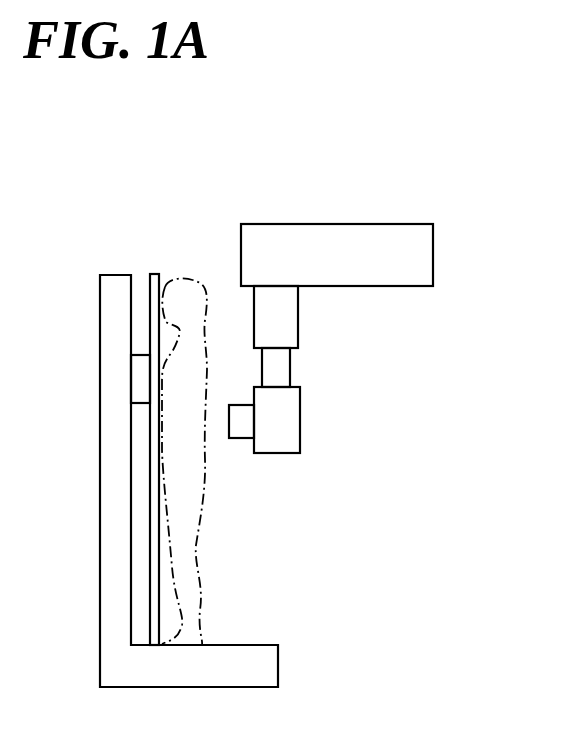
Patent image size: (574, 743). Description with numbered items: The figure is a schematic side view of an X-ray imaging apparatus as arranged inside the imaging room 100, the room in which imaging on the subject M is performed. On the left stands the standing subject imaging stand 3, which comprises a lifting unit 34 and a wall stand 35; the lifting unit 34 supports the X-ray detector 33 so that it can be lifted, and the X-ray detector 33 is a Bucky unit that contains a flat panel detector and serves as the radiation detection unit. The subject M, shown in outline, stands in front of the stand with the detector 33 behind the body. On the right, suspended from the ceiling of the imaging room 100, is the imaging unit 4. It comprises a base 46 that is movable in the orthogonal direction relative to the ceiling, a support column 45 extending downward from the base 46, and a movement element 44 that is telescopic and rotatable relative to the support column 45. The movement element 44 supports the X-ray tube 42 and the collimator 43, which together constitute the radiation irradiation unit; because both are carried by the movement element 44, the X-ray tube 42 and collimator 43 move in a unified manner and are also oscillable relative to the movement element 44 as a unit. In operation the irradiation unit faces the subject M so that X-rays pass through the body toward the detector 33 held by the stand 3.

The imaging room 100 is at (536, 137).
The standing subject imaging stand 3 is at (110, 230).
The imaging unit 4 is at (380, 365).
The X-ray detector 33 is at (142, 372).
The lifting unit 34 is at (110, 453).
The wall stand 35 is at (153, 277).
The subject M is at (193, 283).
The X-ray tube 42 is at (280, 432).
The collimator 43 is at (243, 425).
The movement element 44 is at (277, 367).
The support column 45 is at (285, 310).
The base 46 is at (417, 260).